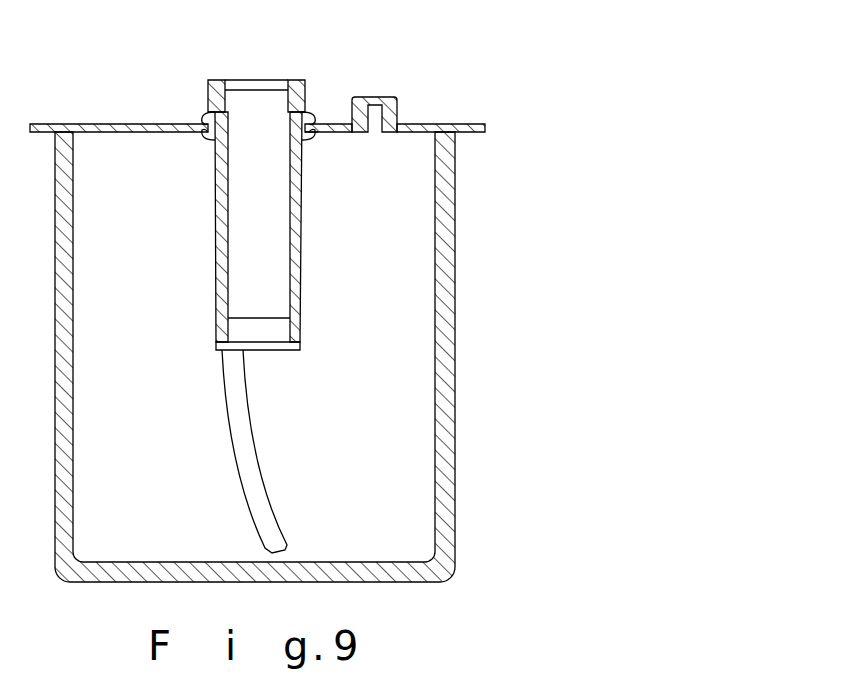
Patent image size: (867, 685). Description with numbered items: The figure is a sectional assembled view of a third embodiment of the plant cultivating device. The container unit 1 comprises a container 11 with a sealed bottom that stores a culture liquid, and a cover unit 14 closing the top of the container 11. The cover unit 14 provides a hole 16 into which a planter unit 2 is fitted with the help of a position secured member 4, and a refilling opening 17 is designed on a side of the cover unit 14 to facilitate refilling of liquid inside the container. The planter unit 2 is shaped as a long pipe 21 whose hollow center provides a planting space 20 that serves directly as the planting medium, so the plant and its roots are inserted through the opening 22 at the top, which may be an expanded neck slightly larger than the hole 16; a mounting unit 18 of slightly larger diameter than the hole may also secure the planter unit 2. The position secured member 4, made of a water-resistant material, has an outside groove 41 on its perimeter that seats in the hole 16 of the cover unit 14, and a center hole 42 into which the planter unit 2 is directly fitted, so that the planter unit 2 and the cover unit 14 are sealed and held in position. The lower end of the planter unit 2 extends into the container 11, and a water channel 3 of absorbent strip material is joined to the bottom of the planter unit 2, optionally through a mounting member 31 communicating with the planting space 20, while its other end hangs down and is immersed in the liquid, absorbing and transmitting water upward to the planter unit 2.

The container unit 1 is at (268, 317).
The container 11 is at (455, 265).
The cover unit 14 is at (263, 92).
The hole 16 is at (310, 130).
The refilling opening 17 is at (392, 108).
The mounting unit 18 is at (297, 83).
The planter unit 2 is at (364, 193).
The planting space 20 is at (273, 195).
The long pipe 21 is at (380, 160).
The opening 22 is at (227, 94).
The water channel 3 is at (263, 493).
The mounting member 31 is at (283, 328).
The position secured member 4 is at (274, 88).
The outside groove 41 is at (308, 123).
The center hole 42 is at (212, 107).